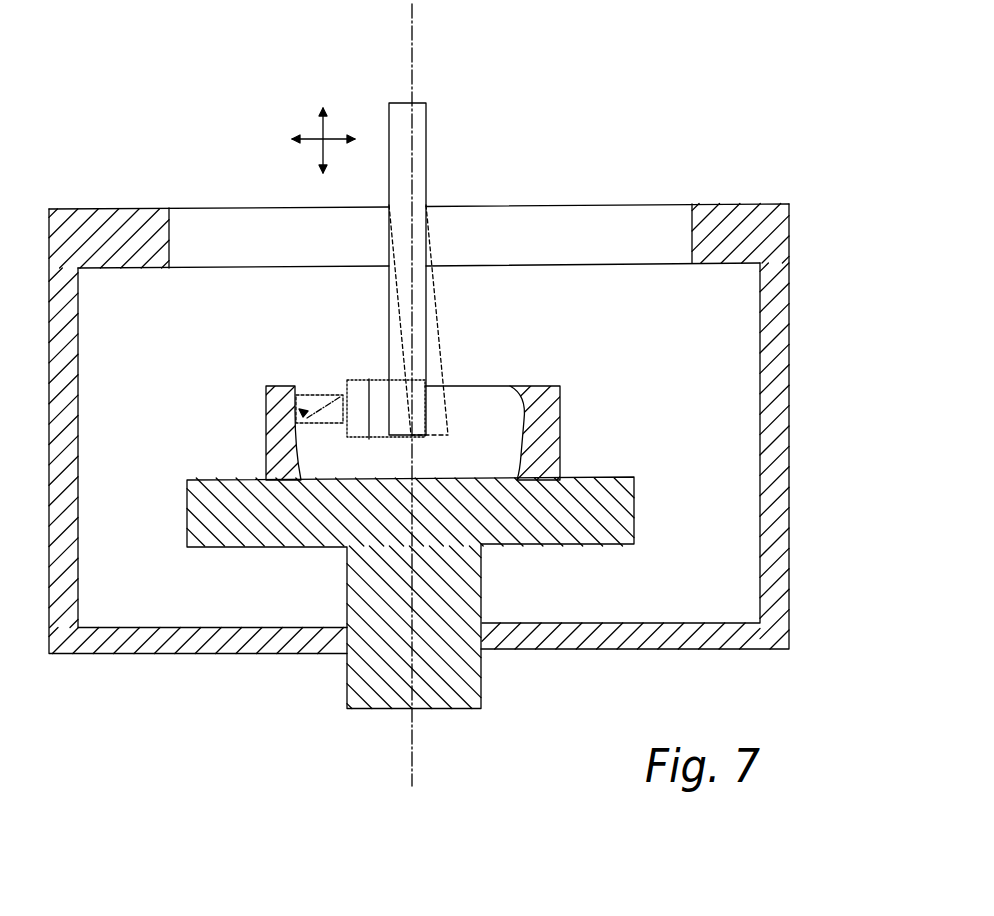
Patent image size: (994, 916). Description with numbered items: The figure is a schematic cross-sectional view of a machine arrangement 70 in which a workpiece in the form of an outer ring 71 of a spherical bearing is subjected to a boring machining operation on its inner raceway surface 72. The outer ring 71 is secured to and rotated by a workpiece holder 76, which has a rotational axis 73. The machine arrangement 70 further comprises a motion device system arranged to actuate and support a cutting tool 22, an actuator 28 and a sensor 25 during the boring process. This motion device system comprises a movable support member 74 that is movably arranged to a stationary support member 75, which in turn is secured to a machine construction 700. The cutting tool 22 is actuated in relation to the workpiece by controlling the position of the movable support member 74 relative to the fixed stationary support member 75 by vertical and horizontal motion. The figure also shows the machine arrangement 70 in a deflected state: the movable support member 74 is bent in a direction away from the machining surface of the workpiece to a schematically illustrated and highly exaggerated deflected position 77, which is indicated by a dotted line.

The cutting tool 22 is at (300, 410).
The sensor 25 is at (375, 378).
The actuator 28 is at (357, 385).
The machine arrangement 70 is at (713, 155).
The outer ring 71 is at (562, 399).
The inner raceway surface 72 is at (510, 407).
The rotational axis 73 is at (416, 763).
The movable support member 74 is at (418, 167).
The stationary support member 75 is at (590, 218).
The workpiece holder 76 is at (591, 492).
The deflected position 77 is at (438, 362).
The machine construction 700 is at (789, 340).